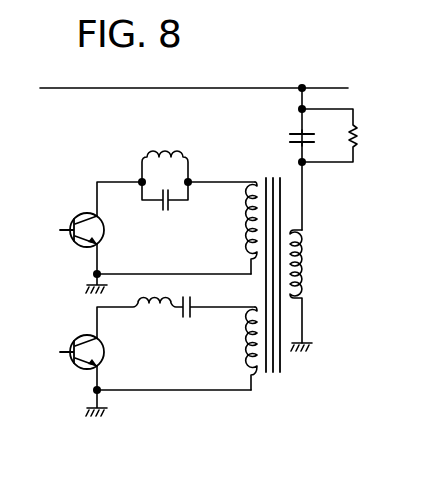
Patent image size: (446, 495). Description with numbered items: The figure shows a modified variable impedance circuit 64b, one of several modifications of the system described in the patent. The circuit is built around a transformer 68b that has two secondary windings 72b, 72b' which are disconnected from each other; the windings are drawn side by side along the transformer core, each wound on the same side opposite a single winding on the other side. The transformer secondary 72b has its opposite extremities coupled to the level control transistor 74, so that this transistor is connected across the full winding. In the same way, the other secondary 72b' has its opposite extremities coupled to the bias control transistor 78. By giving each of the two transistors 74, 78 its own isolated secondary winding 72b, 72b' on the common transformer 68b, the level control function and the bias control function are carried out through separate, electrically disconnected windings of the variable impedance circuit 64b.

The variable impedance circuit 64b is at (134, 194).
The transformer 68b is at (264, 177).
The transformer secondary 72b is at (228, 228).
The secondary winding 72b' is at (227, 348).
The level control transistor 74 is at (102, 230).
The bias control transistor 78 is at (104, 353).